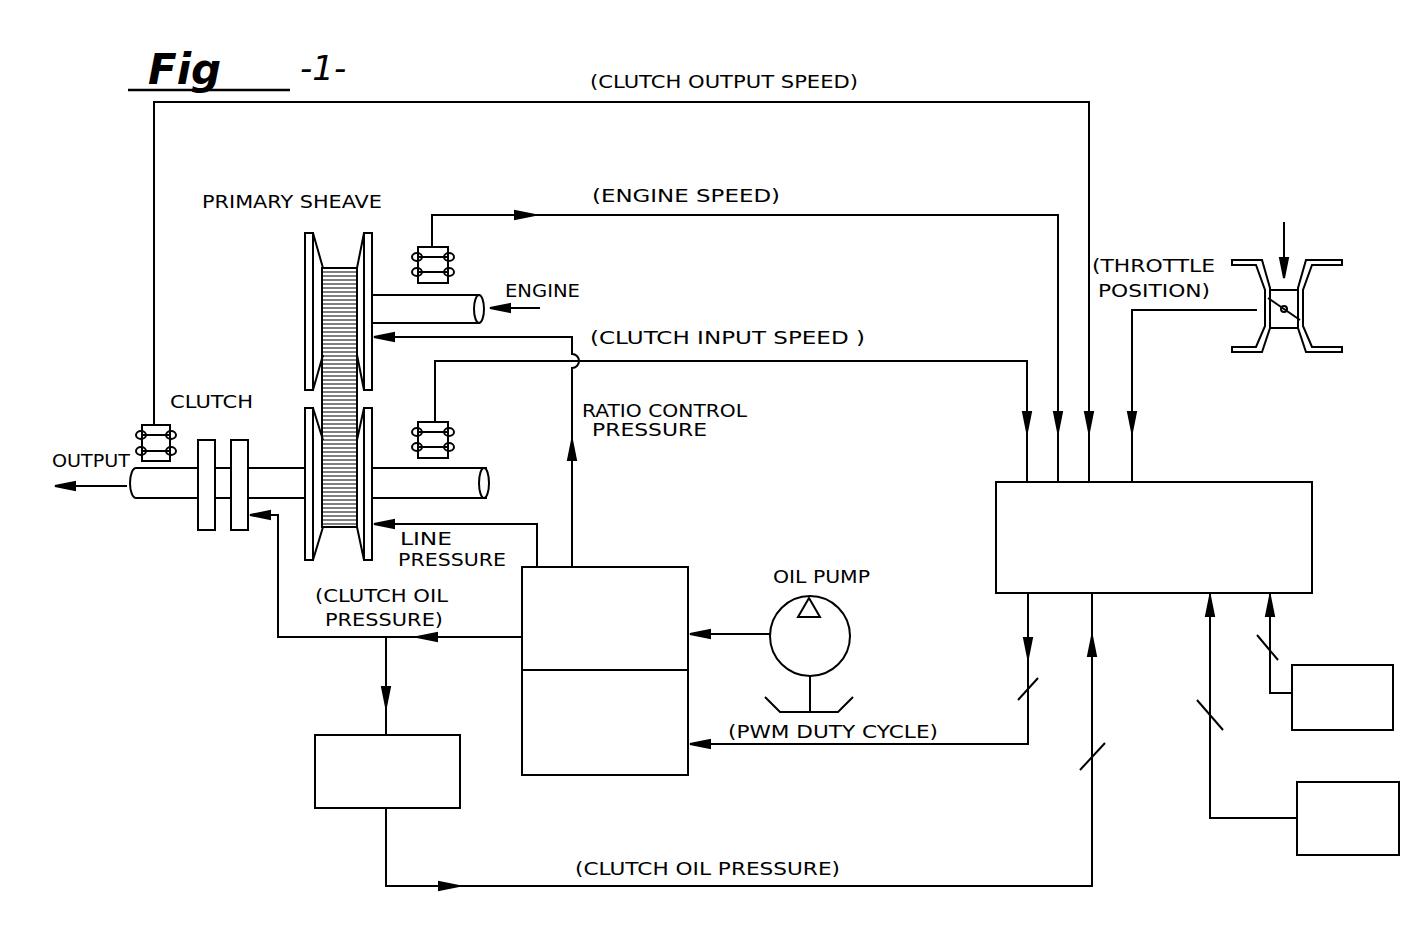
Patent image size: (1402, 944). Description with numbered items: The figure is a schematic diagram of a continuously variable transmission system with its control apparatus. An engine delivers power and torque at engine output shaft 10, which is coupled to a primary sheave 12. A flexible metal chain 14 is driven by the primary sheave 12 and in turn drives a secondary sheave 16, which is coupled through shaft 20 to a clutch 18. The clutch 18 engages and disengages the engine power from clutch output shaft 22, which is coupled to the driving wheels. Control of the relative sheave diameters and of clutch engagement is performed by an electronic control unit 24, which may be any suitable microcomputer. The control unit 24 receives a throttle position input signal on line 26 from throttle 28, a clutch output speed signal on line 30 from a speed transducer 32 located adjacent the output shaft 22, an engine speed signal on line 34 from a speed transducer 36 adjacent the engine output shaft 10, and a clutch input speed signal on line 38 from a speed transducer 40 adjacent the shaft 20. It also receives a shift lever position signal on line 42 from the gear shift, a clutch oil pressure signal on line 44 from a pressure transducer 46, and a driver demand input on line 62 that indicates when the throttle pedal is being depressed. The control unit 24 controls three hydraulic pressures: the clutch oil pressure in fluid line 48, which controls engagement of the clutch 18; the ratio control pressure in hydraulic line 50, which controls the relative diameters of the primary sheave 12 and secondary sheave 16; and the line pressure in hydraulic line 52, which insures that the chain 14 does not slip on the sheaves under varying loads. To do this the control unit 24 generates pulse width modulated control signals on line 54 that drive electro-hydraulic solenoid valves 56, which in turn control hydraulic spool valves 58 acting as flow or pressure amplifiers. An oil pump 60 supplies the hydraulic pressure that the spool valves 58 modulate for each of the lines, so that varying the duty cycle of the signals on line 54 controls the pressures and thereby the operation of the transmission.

The engine output shaft 10 is at (467, 296).
The primary sheave 12 is at (305, 257).
The chain 14 is at (322, 400).
The secondary sheave 16 is at (307, 442).
The clutch 18 is at (222, 532).
The shaft 20 is at (285, 493).
The clutch output shaft 22 is at (160, 496).
The electronic control unit 24 is at (1003, 508).
The throttle position input signal line 26 is at (1132, 393).
The throttle 28 is at (1309, 310).
The clutch output speed signal line 30 is at (983, 102).
The speed transducer 32 is at (142, 447).
The engine speed signal line 34 is at (916, 215).
The speed transducer 36 is at (416, 268).
The clutch input speed signal line 38 is at (965, 360).
The speed transducer 40 is at (417, 445).
The shift lever position signal line 42 is at (1210, 757).
The clutch oil pressure signal line 44 is at (940, 884).
The pressure transducer 46 is at (315, 778).
The fluid line 48 is at (303, 640).
The hydraulic line 50 is at (572, 492).
The hydraulic line 52 is at (532, 522).
The pulse width modulated control signal line 54 is at (1003, 742).
The electro-hydraulic solenoid valves 56 is at (650, 776).
The hydraulic spool valves 58 is at (675, 580).
The oil pump 60 is at (840, 637).
The driver demand input line 62 is at (1270, 623).